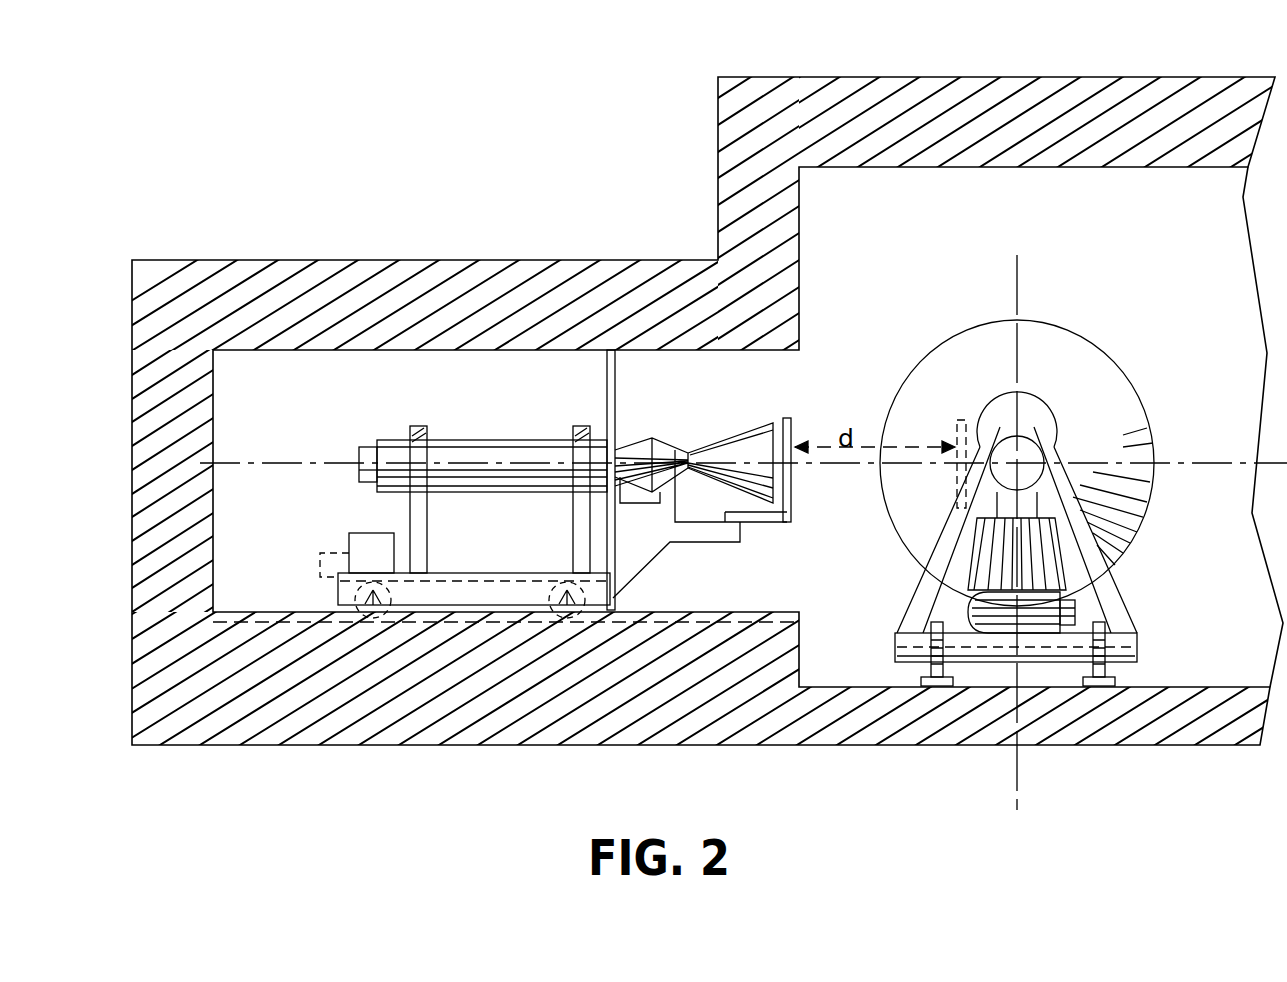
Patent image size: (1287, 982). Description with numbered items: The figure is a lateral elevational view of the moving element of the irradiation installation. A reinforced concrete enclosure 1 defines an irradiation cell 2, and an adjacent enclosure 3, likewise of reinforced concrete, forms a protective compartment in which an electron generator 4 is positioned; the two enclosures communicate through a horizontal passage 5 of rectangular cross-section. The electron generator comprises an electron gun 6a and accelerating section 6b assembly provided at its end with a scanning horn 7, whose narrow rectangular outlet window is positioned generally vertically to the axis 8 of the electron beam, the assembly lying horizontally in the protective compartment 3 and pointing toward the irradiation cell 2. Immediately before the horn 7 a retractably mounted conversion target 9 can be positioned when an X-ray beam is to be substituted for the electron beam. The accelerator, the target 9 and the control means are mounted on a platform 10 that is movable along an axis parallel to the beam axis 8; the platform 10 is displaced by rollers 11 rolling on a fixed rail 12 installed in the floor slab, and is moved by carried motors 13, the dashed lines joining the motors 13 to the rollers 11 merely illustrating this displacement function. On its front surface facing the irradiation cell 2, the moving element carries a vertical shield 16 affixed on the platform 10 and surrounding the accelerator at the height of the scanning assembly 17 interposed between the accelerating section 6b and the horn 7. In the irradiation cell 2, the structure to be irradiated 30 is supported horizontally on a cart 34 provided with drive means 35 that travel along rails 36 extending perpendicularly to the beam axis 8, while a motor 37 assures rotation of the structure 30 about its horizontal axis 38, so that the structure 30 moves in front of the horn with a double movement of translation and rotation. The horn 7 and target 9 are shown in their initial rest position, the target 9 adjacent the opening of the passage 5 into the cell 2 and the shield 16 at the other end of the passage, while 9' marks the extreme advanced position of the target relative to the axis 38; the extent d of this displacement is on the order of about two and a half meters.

The enclosure 1 is at (930, 74).
The irradiation cell 2 is at (858, 200).
The adjacent enclosure 3 is at (296, 258).
The electron generator 4 is at (448, 430).
The horizontal passage 5 is at (765, 368).
The electron gun 6a is at (378, 450).
The accelerating section 6b is at (505, 455).
The scanning horn 7 is at (750, 448).
The axis of the electron beam 8 is at (322, 463).
The conversion target 9 is at (811, 439).
The extreme advanced position of the target 9' is at (922, 417).
The platform 10 is at (334, 595).
The rollers 11 is at (373, 616).
The fixed rail 12 is at (433, 622).
The carried motors 13 is at (376, 545).
The shield 16 is at (610, 388).
The scanning assembly 17 is at (654, 440).
The structure to be irradiated 30 is at (1064, 320).
The cart 34 is at (902, 604).
The drive means 35 is at (1042, 600).
The rails 36 is at (937, 688).
The motor 37 is at (1030, 452).
The axis of the structure 38 is at (1010, 450).